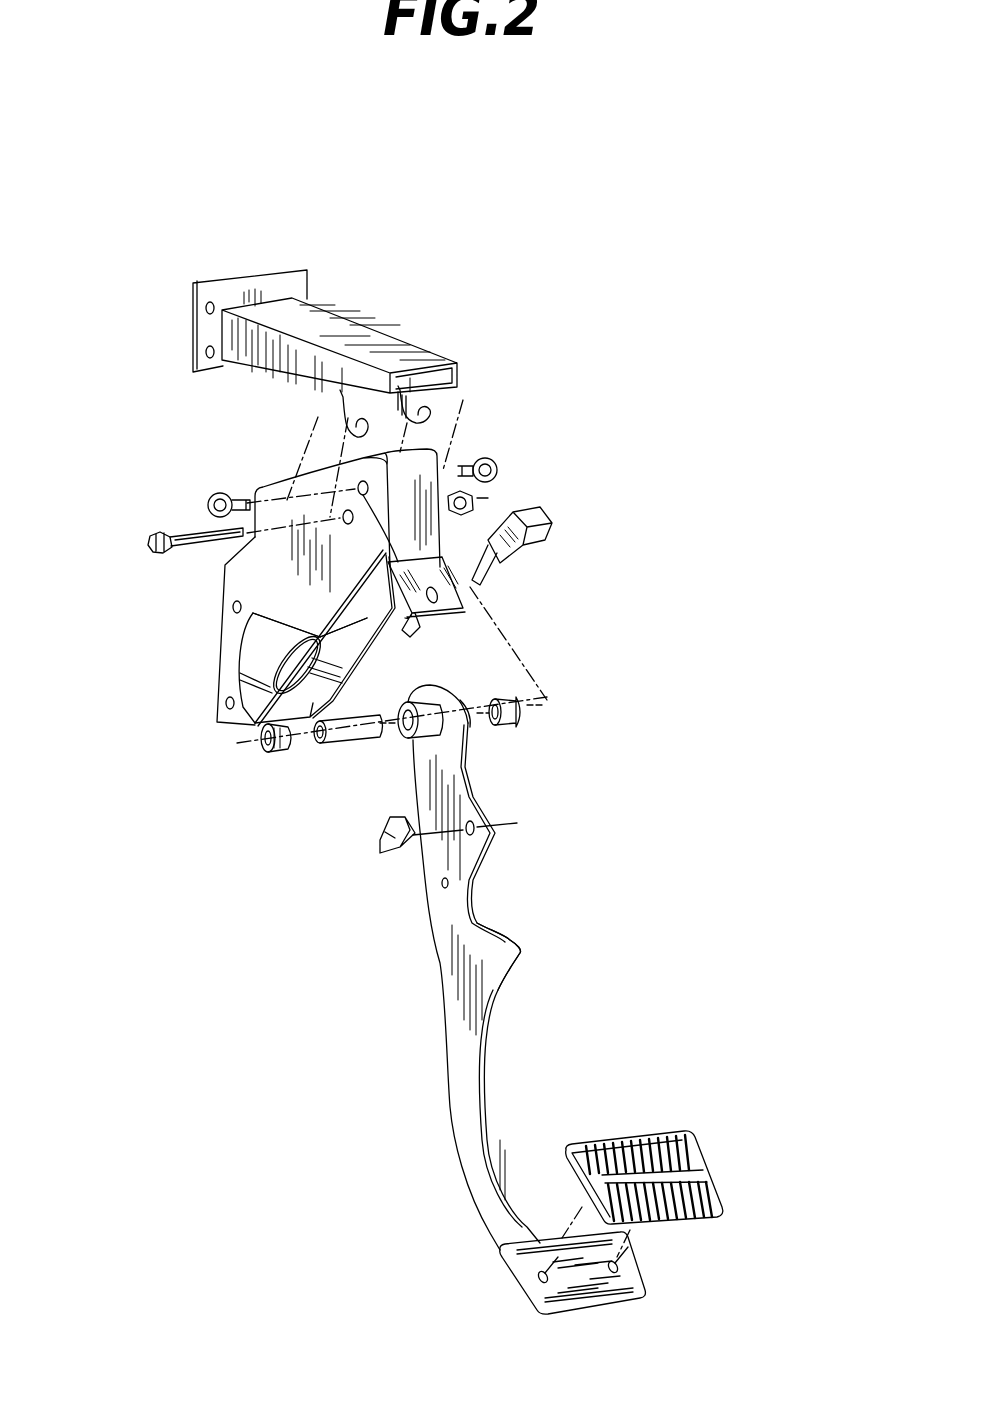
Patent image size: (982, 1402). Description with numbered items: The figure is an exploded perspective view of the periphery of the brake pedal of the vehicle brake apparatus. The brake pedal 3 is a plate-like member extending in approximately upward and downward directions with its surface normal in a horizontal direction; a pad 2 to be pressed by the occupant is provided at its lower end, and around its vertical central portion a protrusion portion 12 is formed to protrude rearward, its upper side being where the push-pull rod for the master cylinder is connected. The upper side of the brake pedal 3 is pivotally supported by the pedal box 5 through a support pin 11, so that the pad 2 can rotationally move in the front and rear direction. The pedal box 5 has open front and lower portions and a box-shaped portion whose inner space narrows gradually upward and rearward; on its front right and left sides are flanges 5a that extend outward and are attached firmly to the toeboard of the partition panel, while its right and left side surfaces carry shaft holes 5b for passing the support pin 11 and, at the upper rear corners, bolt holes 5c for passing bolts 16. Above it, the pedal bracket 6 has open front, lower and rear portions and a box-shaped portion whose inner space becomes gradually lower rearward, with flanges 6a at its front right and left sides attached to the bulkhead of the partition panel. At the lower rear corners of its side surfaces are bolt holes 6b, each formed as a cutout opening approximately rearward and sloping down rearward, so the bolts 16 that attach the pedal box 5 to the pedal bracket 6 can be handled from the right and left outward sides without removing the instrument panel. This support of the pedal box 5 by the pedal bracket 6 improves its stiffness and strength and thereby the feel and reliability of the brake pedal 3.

The pad 2 is at (710, 1150).
The brake pedal 3 is at (460, 1097).
The pedal box 5 is at (369, 587).
The flanges 5a is at (227, 650).
The shaft holes 5b is at (330, 661).
The bolt holes 5c is at (360, 545).
The pedal bracket 6 is at (311, 345).
The flanges 6a is at (190, 340).
The bolt holes 6b is at (343, 397).
The support pin 11 is at (177, 557).
The protrusion portion 12 is at (517, 947).
The bolts 16 is at (207, 505).